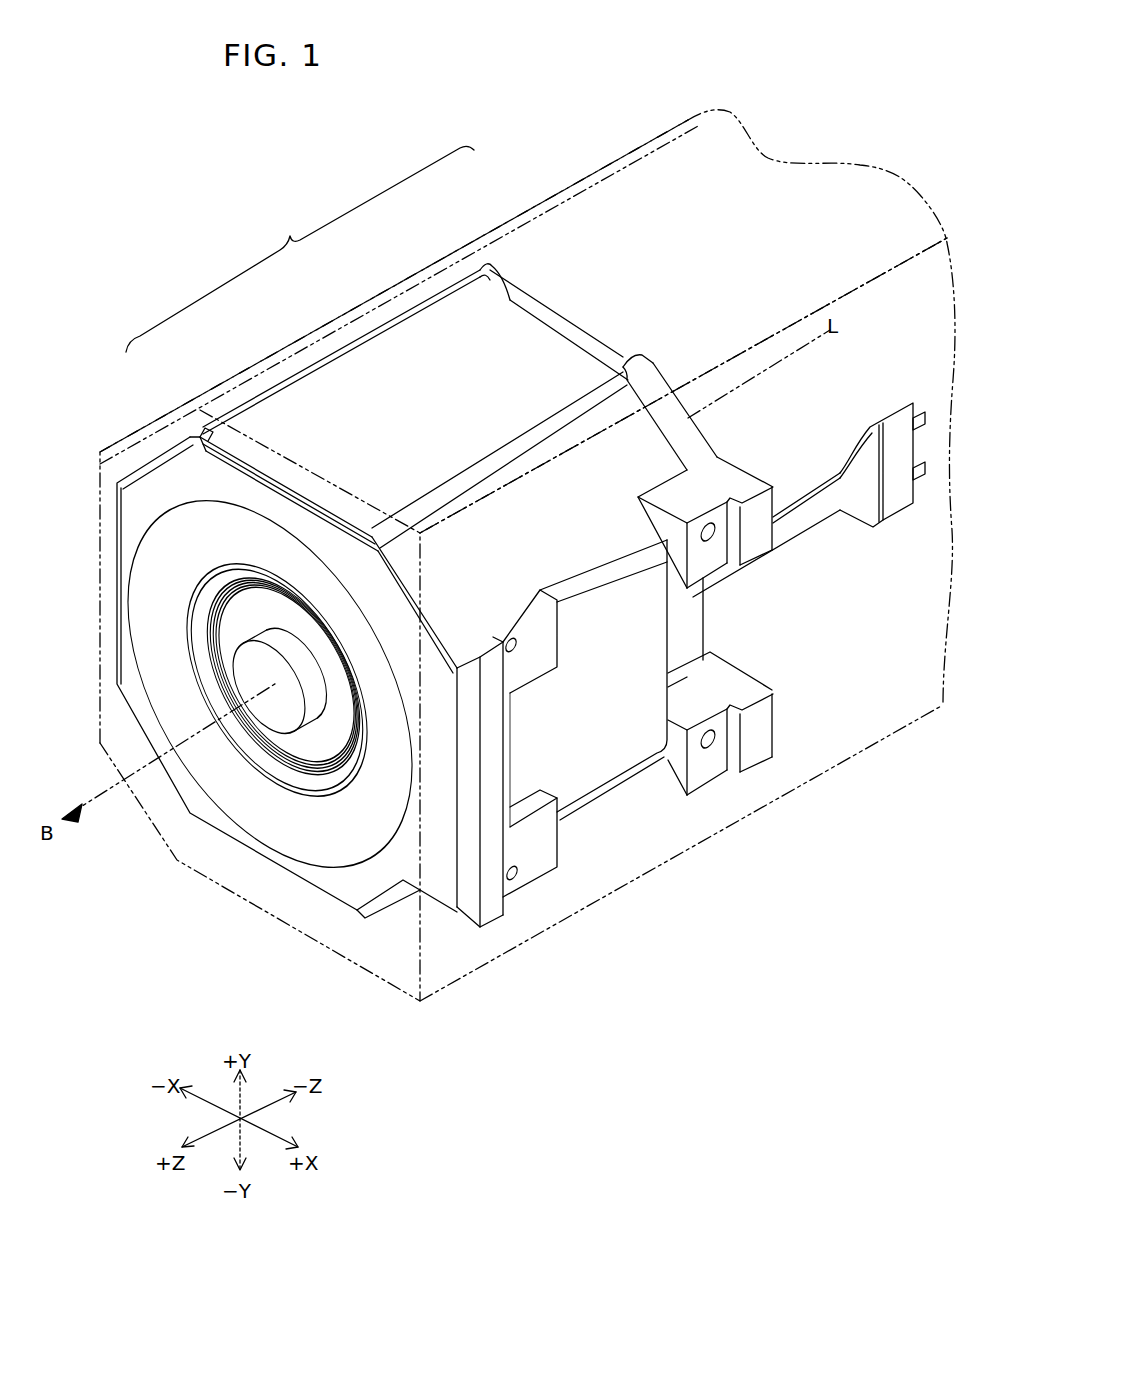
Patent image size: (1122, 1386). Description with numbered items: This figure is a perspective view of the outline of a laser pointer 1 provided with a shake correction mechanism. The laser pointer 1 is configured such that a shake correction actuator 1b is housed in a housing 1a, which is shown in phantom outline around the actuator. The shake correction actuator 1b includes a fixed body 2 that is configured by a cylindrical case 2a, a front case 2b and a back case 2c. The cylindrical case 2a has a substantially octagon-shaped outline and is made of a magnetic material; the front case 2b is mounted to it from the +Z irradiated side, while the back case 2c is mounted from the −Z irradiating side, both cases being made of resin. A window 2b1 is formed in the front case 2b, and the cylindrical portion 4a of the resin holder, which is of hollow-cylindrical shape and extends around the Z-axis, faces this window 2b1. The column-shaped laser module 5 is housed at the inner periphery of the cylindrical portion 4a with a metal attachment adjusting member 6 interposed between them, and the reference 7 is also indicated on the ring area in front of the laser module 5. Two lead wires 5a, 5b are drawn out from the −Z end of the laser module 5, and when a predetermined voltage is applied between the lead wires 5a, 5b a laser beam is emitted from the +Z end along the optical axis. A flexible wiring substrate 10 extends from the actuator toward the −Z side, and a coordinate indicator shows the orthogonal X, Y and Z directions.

The laser pointer 1 is at (850, 130).
The housing 1a is at (665, 130).
The shake correction actuator 1b is at (604, 322).
The fixed body 2 is at (338, 538).
The cylindrical case 2a is at (330, 398).
The front case 2b is at (168, 487).
The window 2b1 is at (213, 552).
The back case 2c is at (490, 267).
The cylindrical portion 4a is at (213, 590).
The laser module 5 is at (250, 668).
The lead wire 5a is at (920, 475).
The lead wire 5b is at (924, 420).
The attachment adjusting member 6 is at (295, 742).
The ring 7 is at (320, 782).
The flexible wiring substrate 10 is at (862, 520).